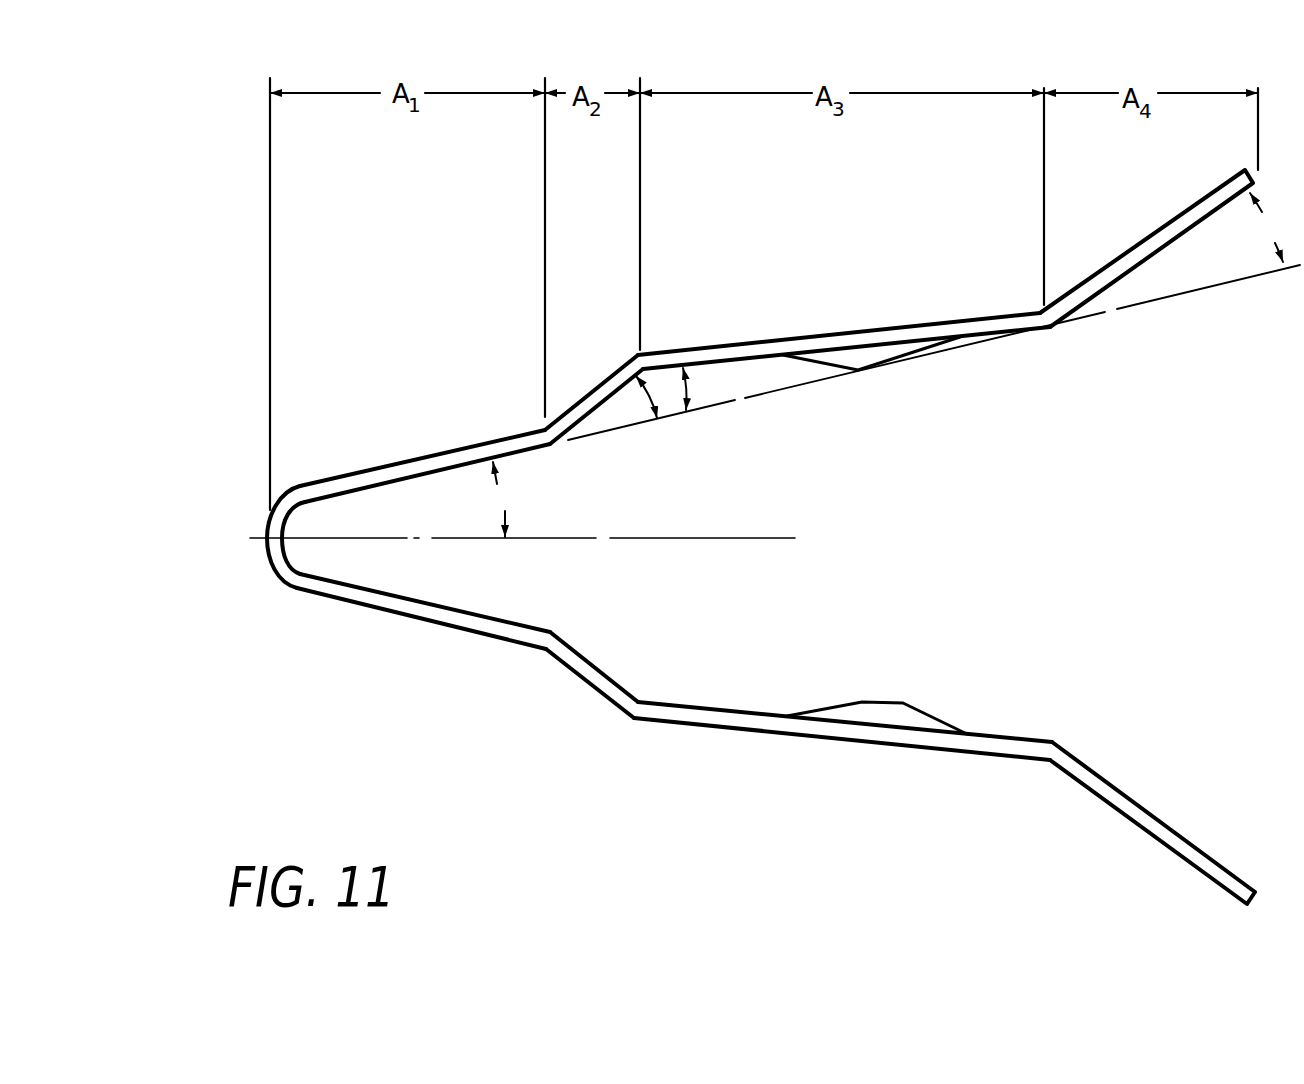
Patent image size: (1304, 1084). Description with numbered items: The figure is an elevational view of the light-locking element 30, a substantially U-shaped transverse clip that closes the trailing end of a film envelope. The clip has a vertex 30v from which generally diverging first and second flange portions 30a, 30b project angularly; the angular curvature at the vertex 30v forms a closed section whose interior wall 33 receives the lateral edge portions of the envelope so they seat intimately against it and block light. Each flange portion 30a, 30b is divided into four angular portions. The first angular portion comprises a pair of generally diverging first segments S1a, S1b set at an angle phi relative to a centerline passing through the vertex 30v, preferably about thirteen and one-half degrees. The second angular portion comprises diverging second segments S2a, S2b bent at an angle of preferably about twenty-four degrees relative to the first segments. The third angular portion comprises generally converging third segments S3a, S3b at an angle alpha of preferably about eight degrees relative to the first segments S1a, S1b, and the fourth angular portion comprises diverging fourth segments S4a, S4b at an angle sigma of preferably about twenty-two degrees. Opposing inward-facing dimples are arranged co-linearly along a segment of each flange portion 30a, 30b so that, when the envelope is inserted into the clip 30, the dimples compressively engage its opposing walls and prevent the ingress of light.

The light-locking element 30 is at (176, 216).
The vertex 30v is at (268, 536).
The interior wall 33 is at (290, 516).
The first flange portion 30a is at (1173, 221).
The second flange portion 30b is at (1088, 771).
The first segment S1a is at (426, 458).
The second segment S2a is at (627, 363).
The third segment S3a is at (857, 333).
The fourth segment S4a is at (1116, 264).
The first segment S1b is at (434, 622).
The second segment S2b is at (587, 681).
The third segment S3b is at (860, 740).
The fourth segment S4b is at (1167, 848).